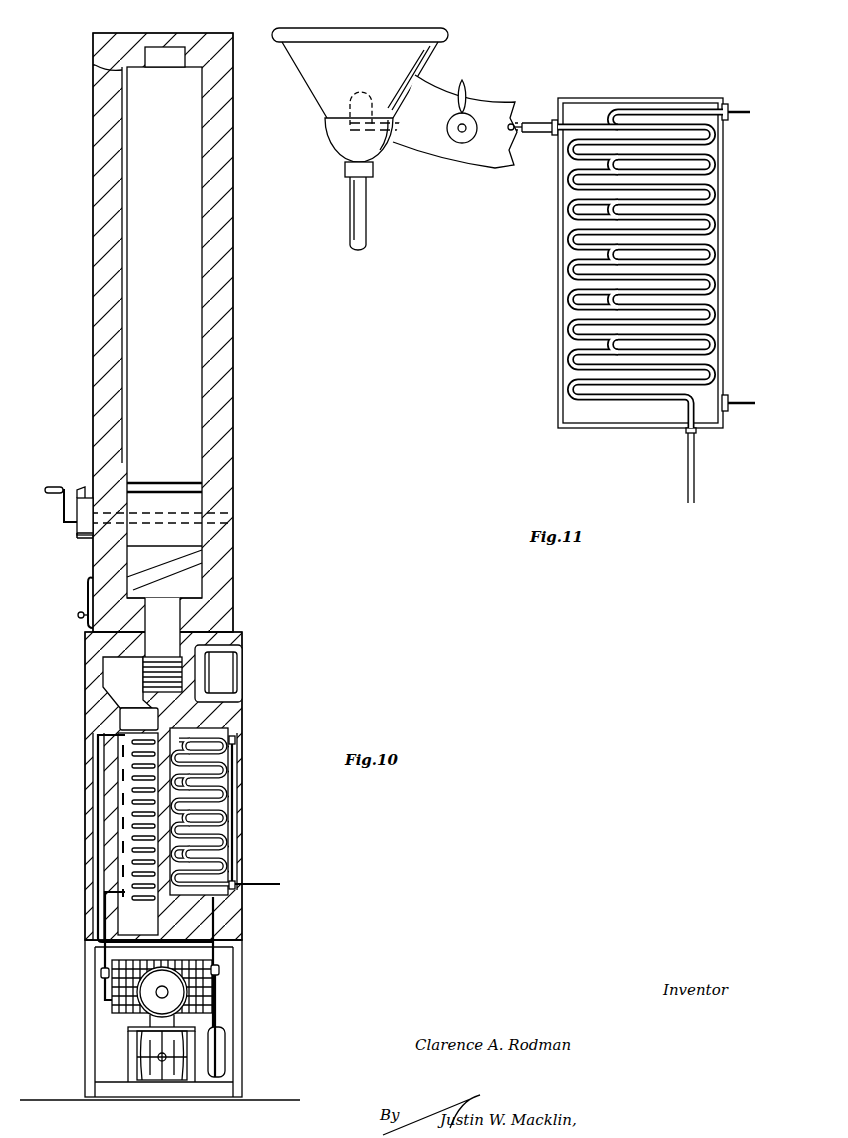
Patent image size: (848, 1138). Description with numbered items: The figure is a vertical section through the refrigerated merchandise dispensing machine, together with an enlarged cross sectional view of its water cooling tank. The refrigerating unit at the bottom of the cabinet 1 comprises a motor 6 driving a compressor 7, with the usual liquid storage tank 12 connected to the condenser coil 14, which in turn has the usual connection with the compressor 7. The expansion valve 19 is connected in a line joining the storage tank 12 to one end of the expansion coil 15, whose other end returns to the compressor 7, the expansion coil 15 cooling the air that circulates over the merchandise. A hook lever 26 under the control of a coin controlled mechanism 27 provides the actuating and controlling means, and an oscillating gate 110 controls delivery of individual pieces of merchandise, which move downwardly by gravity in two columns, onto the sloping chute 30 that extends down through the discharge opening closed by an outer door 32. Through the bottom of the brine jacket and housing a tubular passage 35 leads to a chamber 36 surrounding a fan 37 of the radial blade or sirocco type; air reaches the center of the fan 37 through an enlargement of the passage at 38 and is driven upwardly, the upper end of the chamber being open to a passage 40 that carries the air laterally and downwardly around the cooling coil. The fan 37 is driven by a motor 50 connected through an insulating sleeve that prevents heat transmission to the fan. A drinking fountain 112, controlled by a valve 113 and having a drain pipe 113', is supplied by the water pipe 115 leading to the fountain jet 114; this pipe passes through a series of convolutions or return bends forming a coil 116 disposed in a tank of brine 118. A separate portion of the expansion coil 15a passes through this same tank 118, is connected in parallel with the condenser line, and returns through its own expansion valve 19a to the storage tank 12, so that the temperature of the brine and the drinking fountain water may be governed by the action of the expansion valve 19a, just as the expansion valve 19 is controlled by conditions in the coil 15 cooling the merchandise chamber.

In FIG. 10, the cabinet 1 is at (113, 1088).
In FIG. 10, the motor 6 is at (162, 992).
In FIG. 10, the compressor 7 is at (152, 1084).
In FIG. 10, the liquid storage tank 12 is at (225, 1050).
In FIG. 10, the condenser coil 14 is at (125, 1013).
In FIG. 10, the expansion coil 15 is at (123, 845).
In FIG. 10, the separate portion of the expansion coil 15a is at (215, 782).
In FIG. 11, the separate portion of the expansion coil 15a is at (706, 195).
In FIG. 10, the expansion valve 19 is at (101, 973).
In FIG. 10, the expansion valve 19a is at (219, 970).
In FIG. 10, the hook lever 26 is at (64, 508).
In FIG. 10, the coin controlled mechanism 27 is at (76, 536).
In FIG. 10, the sloping chute 30 is at (163, 572).
In FIG. 10, the outer door 32 is at (88, 595).
In FIG. 10, the tubular passage 35 is at (162, 627).
In FIG. 10, the chamber 36 is at (139, 719).
In FIG. 10, the fan 37 is at (172, 657).
In FIG. 10, the enlargement of the passage 38 is at (103, 688).
In FIG. 10, the passage 40 is at (163, 46).
In FIG. 10, the motor 50 is at (225, 667).
In FIG. 10, the oscillating gate 110 is at (153, 514).
In FIG. 11, the drinking fountain 112 is at (360, 102).
In FIG. 11, the valve 113 is at (455, 118).
In FIG. 11, the drain pipe 113' is at (385, 213).
In FIG. 11, the fountain jet 114 is at (367, 95).
In FIG. 11, the water pipe 115 is at (549, 120).
In FIG. 10, the coil 116 is at (213, 817).
In FIG. 11, the coil 116 is at (600, 127).
In FIG. 10, the tank of brine 118 is at (228, 760).
In FIG. 11, the tank of brine 118 is at (657, 98).